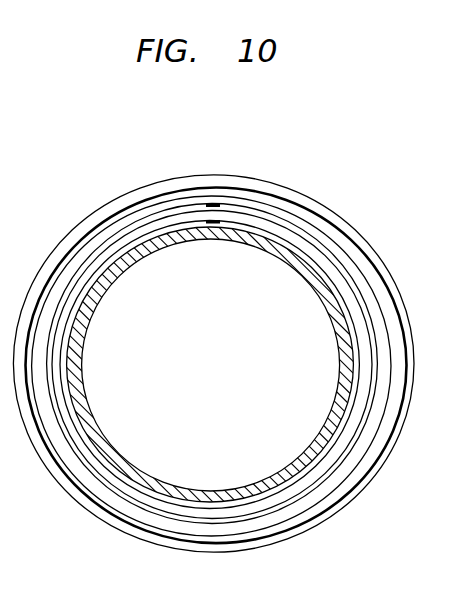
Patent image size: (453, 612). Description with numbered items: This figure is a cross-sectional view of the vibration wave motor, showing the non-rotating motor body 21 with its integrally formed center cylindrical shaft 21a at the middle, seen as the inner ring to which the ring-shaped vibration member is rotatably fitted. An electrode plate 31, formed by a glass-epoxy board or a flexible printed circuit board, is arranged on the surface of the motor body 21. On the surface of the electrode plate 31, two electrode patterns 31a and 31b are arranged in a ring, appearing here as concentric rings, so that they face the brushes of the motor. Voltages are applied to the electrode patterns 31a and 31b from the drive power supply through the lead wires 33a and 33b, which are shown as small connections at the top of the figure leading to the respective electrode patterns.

The motor body 21 is at (314, 206).
The center cylindrical shaft 21a is at (112, 278).
The electrode plate 31 is at (341, 243).
The electrode pattern 31a is at (348, 269).
The electrode pattern 31b is at (352, 312).
The lead wire 33a is at (214, 204).
The lead wire 33b is at (212, 224).